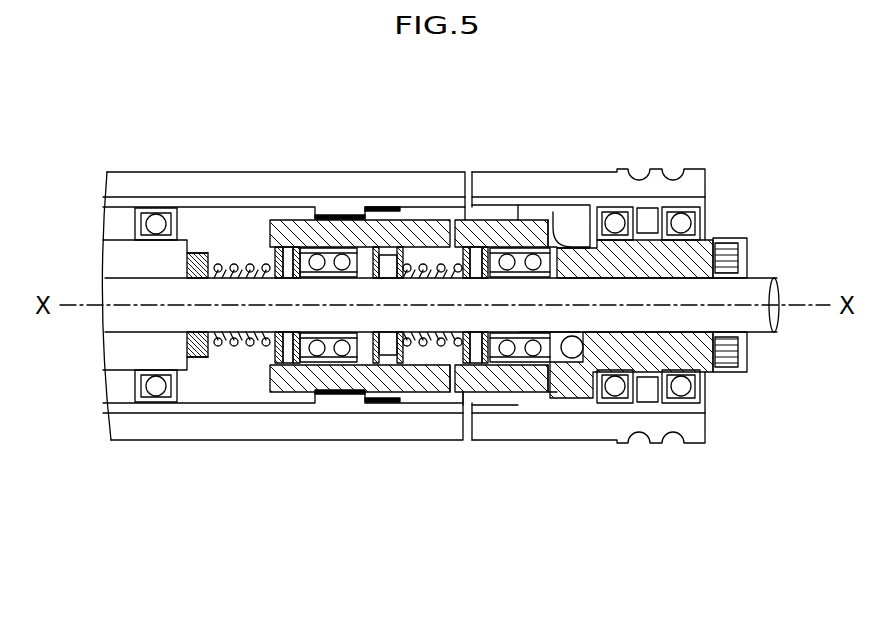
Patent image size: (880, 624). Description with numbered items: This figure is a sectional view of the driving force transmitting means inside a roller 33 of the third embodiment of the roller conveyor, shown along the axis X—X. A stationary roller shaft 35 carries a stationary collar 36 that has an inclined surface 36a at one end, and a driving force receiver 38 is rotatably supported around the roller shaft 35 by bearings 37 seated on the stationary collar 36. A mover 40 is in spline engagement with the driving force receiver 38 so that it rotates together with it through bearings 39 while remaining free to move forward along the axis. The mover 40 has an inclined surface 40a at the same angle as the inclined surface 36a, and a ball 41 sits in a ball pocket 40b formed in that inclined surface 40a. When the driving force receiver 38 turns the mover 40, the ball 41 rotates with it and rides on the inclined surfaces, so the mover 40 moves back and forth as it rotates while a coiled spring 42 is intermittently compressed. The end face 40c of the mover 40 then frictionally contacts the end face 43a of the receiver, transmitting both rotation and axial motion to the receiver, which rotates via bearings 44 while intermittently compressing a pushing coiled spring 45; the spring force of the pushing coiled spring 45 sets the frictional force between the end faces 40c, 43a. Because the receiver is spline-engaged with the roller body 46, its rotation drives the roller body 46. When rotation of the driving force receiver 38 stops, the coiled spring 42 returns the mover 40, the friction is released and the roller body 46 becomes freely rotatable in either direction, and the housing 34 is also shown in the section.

The roller 33 is at (92, 187).
The housing 34 is at (337, 427).
The stationary roller shaft 35 is at (757, 280).
The stationary collar 36 is at (707, 250).
The inclined surface 36a is at (540, 210).
The bearings 37 is at (720, 372).
The driving force receiver 38 is at (660, 165).
The bearings 39 is at (540, 327).
The mover 40 is at (483, 220).
The inclined surface 40a is at (557, 247).
The ball pocket 40b is at (562, 375).
The end face 40c is at (447, 377).
The ball 41 is at (578, 358).
The coiled spring 42 is at (423, 257).
The end face 43a is at (463, 398).
The bearings 44 is at (323, 268).
The pushing coiled spring 45 is at (240, 358).
The roller body 46 is at (143, 165).